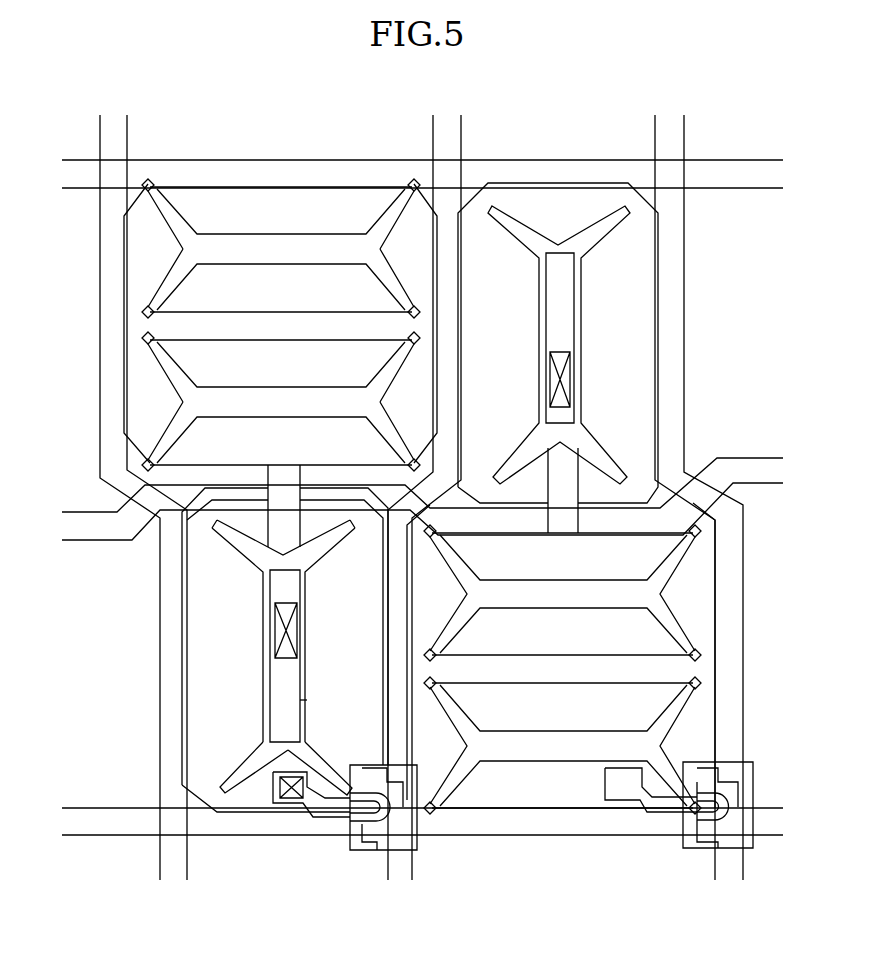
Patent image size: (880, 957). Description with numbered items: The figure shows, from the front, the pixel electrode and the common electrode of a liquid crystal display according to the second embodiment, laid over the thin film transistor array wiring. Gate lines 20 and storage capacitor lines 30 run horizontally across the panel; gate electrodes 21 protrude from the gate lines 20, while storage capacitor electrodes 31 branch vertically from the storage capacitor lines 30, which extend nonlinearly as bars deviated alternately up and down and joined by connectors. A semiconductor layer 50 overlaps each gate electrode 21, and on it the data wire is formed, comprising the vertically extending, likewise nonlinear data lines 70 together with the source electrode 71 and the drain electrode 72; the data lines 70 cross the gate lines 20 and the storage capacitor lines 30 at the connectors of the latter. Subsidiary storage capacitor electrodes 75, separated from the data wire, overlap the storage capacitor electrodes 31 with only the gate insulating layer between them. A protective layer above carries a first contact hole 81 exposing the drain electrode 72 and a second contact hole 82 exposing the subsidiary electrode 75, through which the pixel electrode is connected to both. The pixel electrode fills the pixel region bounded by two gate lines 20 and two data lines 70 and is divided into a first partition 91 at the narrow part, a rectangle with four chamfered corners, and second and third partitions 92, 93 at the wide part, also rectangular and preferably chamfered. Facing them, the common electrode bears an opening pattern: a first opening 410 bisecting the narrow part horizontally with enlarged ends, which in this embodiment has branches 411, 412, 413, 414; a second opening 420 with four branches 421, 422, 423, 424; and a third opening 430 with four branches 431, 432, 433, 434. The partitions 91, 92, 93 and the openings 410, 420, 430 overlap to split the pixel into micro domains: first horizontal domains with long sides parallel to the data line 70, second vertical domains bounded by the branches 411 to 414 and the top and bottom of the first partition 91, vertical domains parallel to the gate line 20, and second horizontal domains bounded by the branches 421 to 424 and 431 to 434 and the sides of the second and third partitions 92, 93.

The gate line 20 is at (516, 835).
The gate electrode 21 is at (413, 760).
The storage capacitor line 30 is at (97, 512).
The storage capacitor electrode 31 is at (313, 705).
The semiconductor layer 50 is at (389, 820).
The data line 70 is at (412, 588).
The source electrode 71 is at (377, 852).
The drain electrode 72 is at (290, 803).
The subsidiary storage capacitor electrode 75 is at (305, 611).
The first contact hole 81 is at (303, 768).
The second contact hole 82 is at (302, 642).
The first partition 91 is at (182, 660).
The second partition 92 is at (125, 394).
The third partition 93 is at (122, 270).
The first opening 410 is at (287, 657).
The branch of first opening 411 is at (246, 756).
The branch of first opening 412 is at (337, 762).
The branch of first opening 413 is at (332, 550).
The branch of first opening 414 is at (236, 543).
The second opening 420 is at (281, 401).
The branch of second opening 421 is at (403, 390).
The branch of second opening 422 is at (383, 432).
The branch of second opening 423 is at (187, 435).
The branch of second opening 424 is at (183, 362).
The third opening 430 is at (281, 225).
The branch of third opening 431 is at (378, 216).
The branch of third opening 432 is at (377, 287).
The branch of third opening 433 is at (183, 280).
The branch of third opening 434 is at (187, 218).